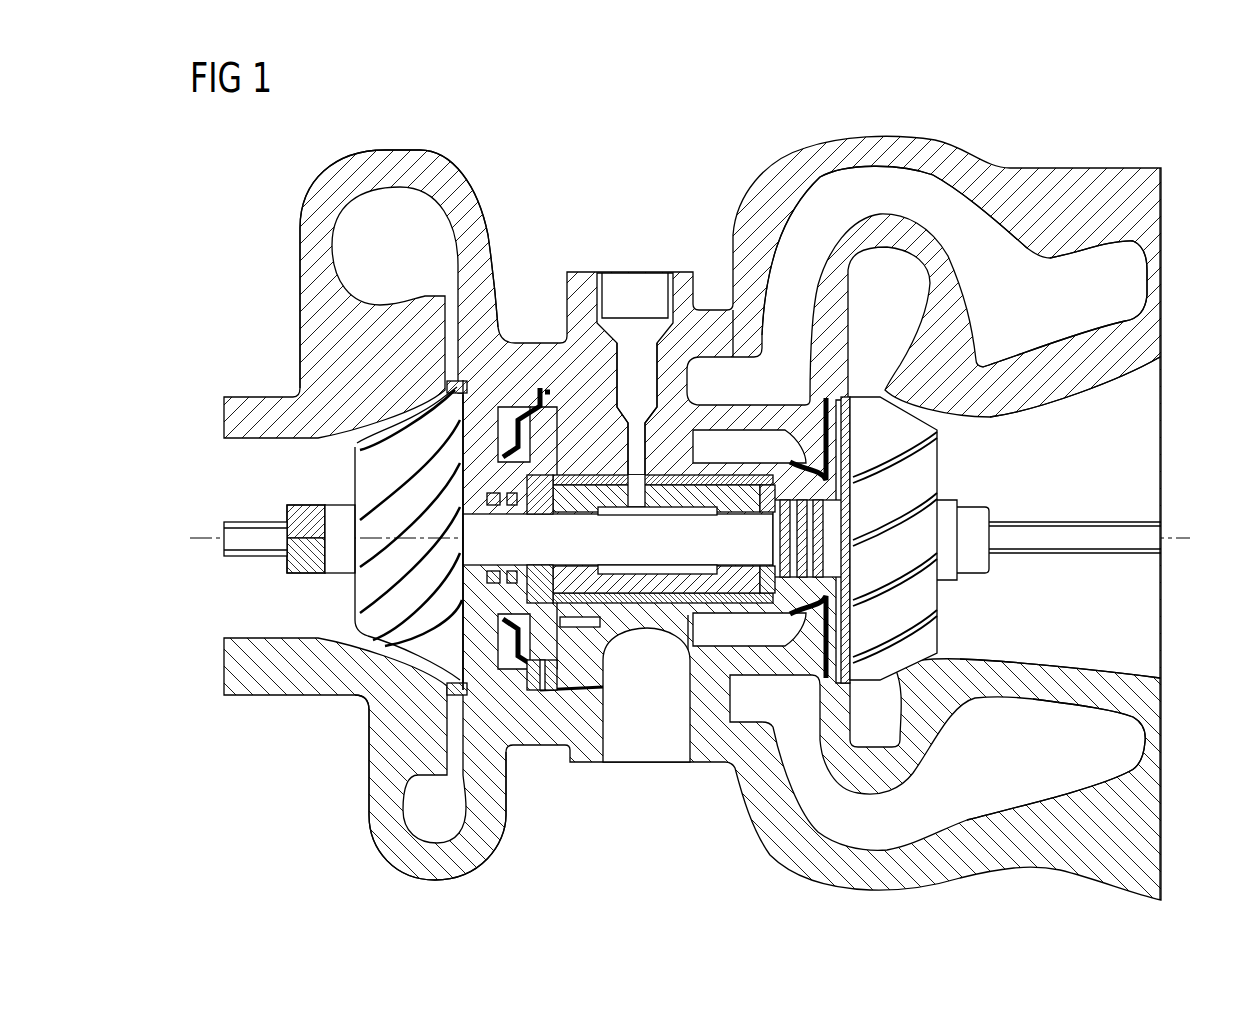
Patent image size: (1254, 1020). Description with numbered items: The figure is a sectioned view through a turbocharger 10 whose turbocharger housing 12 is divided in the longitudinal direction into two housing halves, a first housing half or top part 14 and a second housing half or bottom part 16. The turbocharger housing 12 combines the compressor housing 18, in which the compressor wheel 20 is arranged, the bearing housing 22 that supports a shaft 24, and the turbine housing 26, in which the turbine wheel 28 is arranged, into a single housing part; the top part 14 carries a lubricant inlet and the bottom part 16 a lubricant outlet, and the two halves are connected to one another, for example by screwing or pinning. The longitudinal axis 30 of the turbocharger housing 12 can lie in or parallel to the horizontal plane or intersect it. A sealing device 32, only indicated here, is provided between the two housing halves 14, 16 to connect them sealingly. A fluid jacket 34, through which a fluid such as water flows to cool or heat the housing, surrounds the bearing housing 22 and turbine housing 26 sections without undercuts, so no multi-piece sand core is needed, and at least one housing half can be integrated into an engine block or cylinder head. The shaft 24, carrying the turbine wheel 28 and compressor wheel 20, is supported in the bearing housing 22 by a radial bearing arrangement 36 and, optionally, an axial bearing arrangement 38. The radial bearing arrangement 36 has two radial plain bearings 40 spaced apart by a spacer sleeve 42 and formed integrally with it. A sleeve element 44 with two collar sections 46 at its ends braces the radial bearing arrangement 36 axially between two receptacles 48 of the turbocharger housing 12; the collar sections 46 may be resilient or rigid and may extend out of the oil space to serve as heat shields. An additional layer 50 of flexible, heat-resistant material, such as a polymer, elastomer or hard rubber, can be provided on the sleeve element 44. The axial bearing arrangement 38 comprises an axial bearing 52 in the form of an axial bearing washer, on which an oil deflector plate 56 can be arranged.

The turbocharger 10 is at (1064, 162).
The turbocharger housing 12 is at (1129, 163).
The first housing half 14 is at (1150, 207).
The second housing half 16 is at (1145, 847).
The compressor housing 18 is at (448, 154).
The compressor wheel 20 is at (362, 478).
The bearing housing 22 is at (577, 266).
The shaft 24 is at (685, 560).
The turbine housing 26 is at (917, 131).
The turbine wheel 28 is at (935, 463).
The longitudinal axis 30 is at (627, 605).
The sealing device 32 is at (1098, 522).
The fluid jacket 34 is at (1133, 283).
The radial bearing arrangement 36 is at (705, 618).
The axial bearing arrangement 38 is at (463, 613).
The radial plain bearing 40 is at (637, 432).
The spacer sleeve 42 is at (737, 460).
The sleeve element 44 is at (758, 633).
The collar section 46 is at (836, 643).
The receptacle 48 is at (590, 437).
The additional layer 50 is at (709, 633).
The axial bearing 52 is at (565, 509).
The oil deflector plate 56 is at (535, 703).